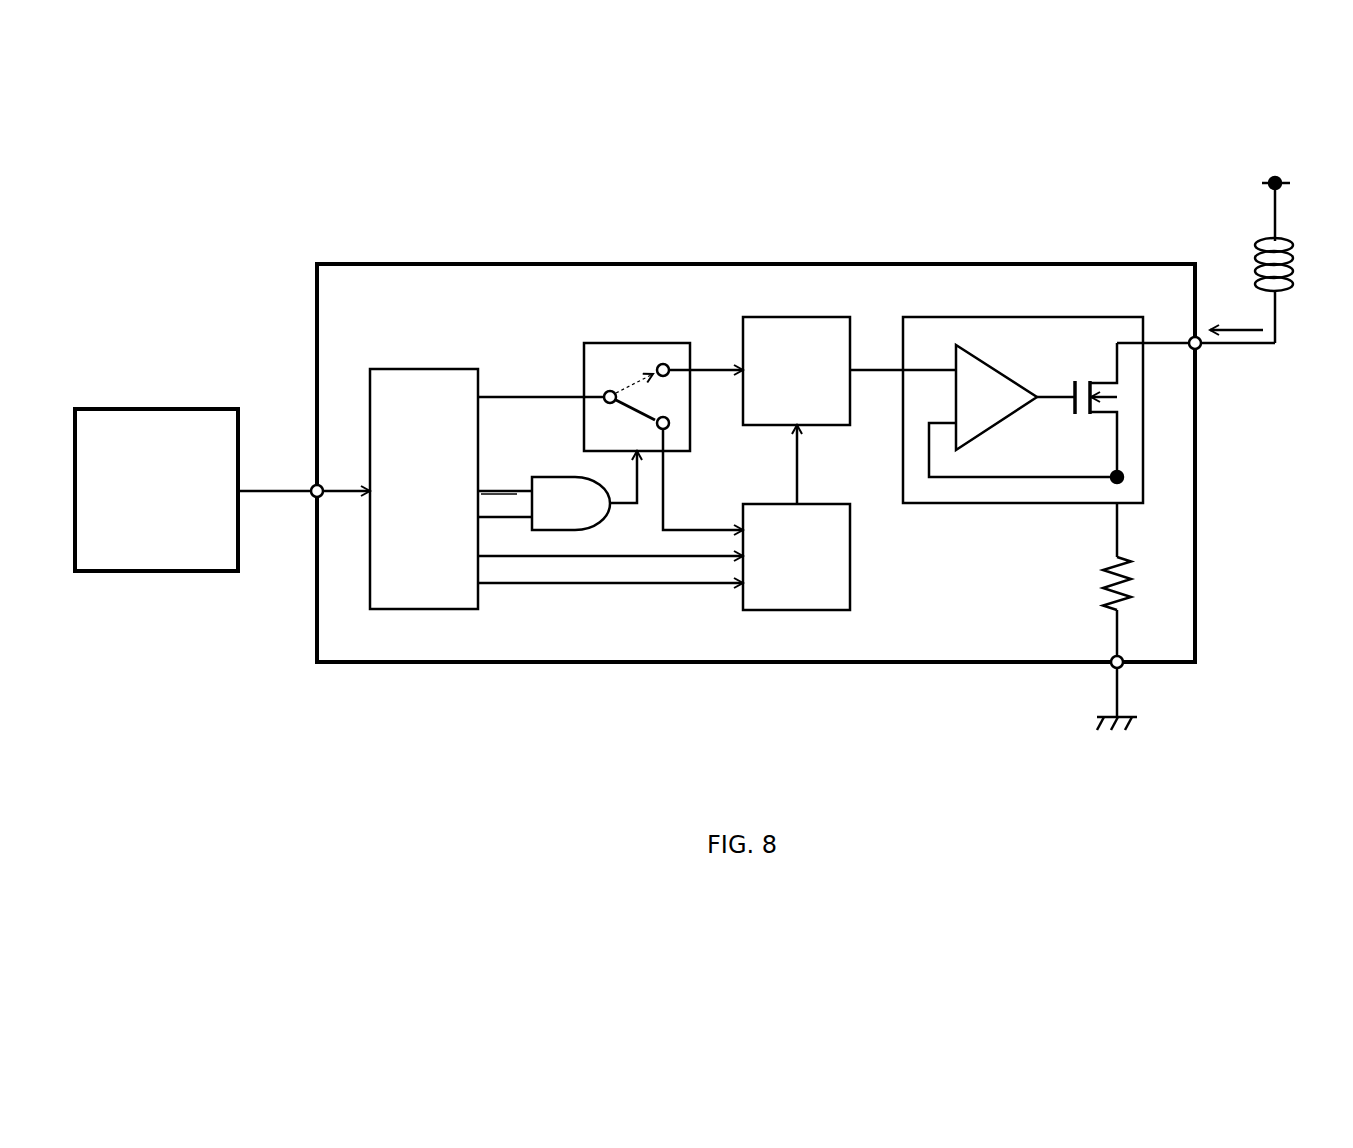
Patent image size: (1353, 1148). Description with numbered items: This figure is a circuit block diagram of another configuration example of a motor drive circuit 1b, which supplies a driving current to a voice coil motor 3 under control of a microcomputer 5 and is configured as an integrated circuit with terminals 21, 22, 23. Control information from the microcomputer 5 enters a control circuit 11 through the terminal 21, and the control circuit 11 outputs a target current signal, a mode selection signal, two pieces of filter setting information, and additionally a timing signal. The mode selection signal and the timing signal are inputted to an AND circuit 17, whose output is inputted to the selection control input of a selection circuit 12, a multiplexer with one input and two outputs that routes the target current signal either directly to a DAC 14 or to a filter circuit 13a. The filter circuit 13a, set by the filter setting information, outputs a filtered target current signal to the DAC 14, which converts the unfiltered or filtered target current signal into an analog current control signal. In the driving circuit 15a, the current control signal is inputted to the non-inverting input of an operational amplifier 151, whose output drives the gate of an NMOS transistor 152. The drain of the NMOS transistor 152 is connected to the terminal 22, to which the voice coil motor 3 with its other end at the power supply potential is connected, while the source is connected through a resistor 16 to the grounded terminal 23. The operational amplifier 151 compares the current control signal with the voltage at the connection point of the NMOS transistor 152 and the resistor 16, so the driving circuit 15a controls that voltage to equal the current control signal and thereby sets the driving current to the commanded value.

The motor drive circuit 1b is at (1130, 264).
The voice coil motor 3 is at (1292, 280).
The microcomputer 5 is at (160, 409).
The control circuit 11 is at (428, 369).
The selection circuit 12 is at (638, 343).
The filter circuit 13a is at (797, 610).
The DAC 14 is at (797, 317).
The driving circuit 15a is at (1015, 317).
The resistor 16 is at (1131, 590).
The AND circuit 17 is at (534, 477).
The terminal 21 is at (314, 497).
The terminal 22 is at (1198, 350).
The terminal 23 is at (1120, 668).
The operational amplifier 151 is at (958, 450).
The NMOS transistor 152 is at (1092, 385).